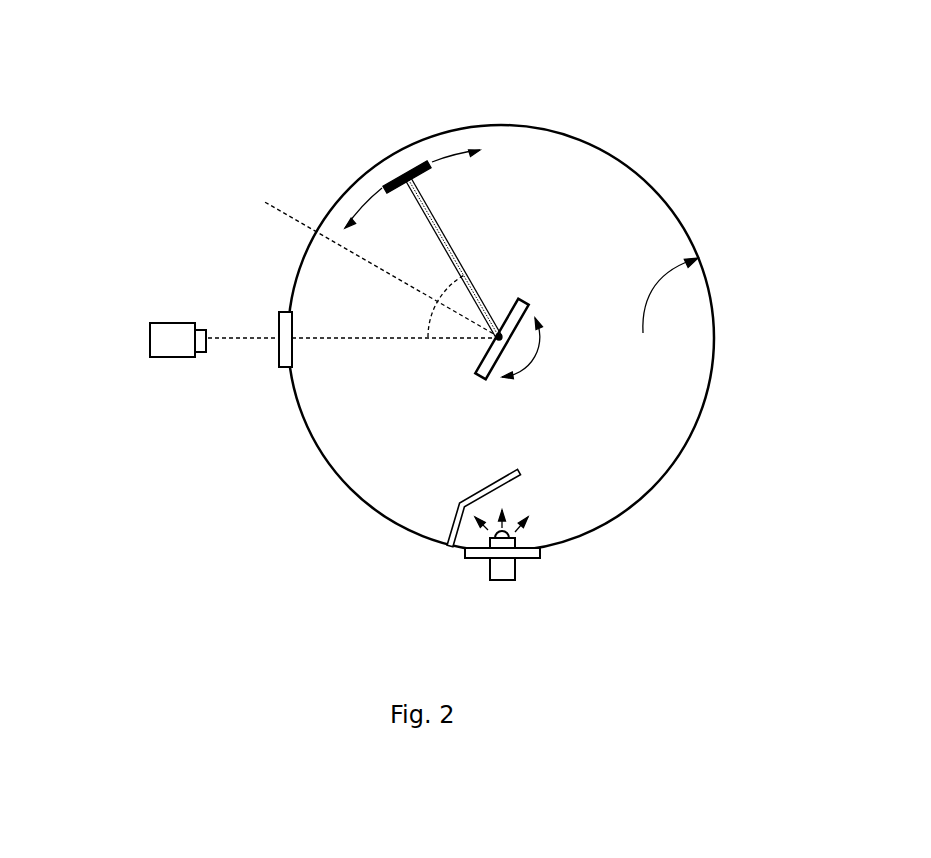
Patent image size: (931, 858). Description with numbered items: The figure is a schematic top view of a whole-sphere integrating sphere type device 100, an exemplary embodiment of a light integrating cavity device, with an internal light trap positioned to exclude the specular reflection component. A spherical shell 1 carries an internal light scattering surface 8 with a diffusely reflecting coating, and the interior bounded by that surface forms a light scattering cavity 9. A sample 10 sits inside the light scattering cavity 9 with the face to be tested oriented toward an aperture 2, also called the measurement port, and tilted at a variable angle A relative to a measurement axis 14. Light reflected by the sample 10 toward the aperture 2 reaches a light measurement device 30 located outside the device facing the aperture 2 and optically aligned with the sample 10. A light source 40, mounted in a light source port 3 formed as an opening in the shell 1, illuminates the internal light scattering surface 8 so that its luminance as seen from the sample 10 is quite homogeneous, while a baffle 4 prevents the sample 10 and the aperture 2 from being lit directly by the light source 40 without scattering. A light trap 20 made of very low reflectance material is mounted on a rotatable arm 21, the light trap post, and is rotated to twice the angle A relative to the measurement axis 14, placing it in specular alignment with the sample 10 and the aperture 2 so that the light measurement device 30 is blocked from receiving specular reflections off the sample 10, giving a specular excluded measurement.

The integrating sphere type device 100 is at (452, 32).
The spherical shell 1 is at (380, 338).
The aperture 2 is at (168, 388).
The light source port 3 is at (292, 584).
The baffle 4 is at (615, 478).
The internal light scattering surface 8 is at (666, 313).
The light scattering cavity 9 is at (433, 423).
The sample 10 is at (635, 299).
The measurement axis 14 is at (375, 338).
The light trap 20 is at (253, 181).
The rotatable arm 21 is at (600, 250).
The light measurement device 30 is at (117, 367).
The light source 40 is at (645, 607).